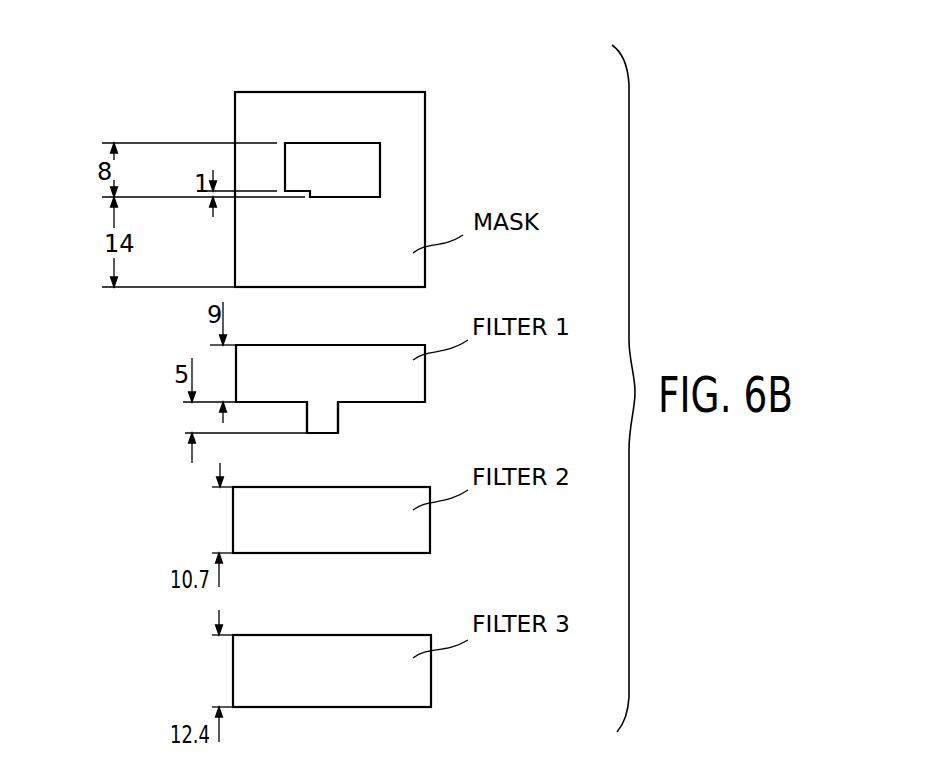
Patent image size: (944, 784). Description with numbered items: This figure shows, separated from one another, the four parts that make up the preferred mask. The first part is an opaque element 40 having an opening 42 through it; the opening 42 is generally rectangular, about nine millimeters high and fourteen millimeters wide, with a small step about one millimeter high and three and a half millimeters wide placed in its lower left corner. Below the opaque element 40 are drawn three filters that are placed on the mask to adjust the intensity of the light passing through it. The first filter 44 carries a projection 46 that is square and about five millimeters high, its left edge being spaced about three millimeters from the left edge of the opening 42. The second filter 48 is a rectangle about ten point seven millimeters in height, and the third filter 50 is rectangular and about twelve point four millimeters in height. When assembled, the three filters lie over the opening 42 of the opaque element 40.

The opaque element 40 is at (413, 150).
The opening 42 is at (359, 147).
The first filter 44 is at (428, 388).
The projection 46 is at (338, 420).
The second filter 48 is at (430, 540).
The third filter 50 is at (415, 692).